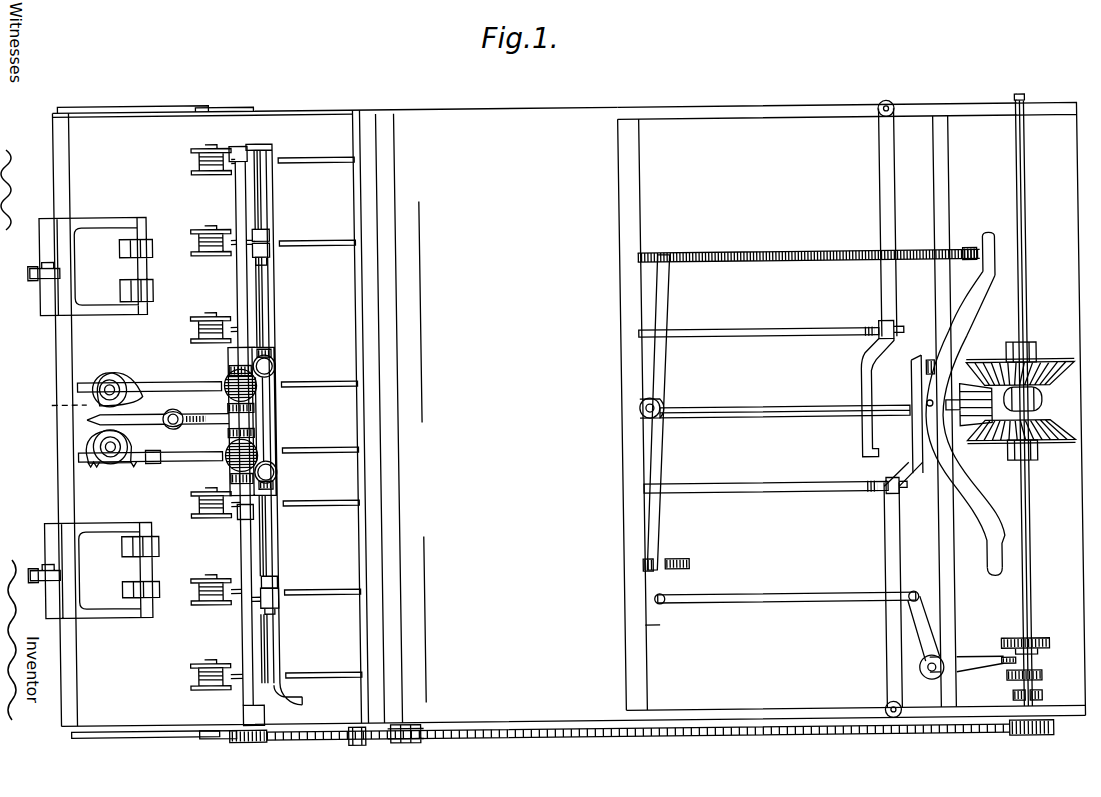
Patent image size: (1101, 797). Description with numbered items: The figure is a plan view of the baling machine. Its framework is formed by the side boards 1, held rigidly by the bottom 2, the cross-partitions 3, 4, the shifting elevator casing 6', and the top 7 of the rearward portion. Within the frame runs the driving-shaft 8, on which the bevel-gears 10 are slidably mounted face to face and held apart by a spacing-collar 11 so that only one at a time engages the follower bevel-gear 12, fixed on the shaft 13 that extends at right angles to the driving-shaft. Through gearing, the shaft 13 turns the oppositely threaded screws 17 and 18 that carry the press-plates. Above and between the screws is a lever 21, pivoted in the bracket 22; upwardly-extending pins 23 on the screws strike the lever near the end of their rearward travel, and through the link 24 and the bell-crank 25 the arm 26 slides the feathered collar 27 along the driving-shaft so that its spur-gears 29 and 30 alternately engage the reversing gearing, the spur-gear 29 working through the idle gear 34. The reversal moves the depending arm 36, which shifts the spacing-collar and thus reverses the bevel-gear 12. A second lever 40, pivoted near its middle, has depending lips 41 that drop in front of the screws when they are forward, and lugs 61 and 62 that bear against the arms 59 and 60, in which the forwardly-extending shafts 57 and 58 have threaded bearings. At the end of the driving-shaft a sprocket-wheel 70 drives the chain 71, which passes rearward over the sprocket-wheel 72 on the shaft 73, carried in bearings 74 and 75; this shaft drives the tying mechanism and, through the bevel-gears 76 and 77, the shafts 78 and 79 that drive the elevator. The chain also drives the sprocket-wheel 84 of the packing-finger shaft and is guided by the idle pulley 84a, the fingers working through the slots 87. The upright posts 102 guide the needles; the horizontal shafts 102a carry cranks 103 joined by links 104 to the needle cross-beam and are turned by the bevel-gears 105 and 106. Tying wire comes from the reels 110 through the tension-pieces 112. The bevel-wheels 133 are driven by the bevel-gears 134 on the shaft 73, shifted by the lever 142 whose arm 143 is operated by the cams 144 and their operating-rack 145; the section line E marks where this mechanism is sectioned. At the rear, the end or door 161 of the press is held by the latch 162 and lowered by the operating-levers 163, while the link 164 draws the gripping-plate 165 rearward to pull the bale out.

The side boards 1 is at (716, 713).
The bottom 2 is at (851, 411).
The cross-partition 3 is at (953, 163).
The cross-partition 4 is at (657, 414).
The shifting elevator casing 6' is at (423, 416).
The top 7 is at (338, 382).
The driving-shaft 8 is at (1029, 521).
The bevel-gears 10 is at (1057, 369).
The spacing-collar 11 is at (1042, 391).
The bevel-gear 12 is at (954, 402).
The shaft 13 is at (774, 422).
The screw 17 is at (721, 254).
The screw 18 is at (690, 568).
The lever 21 is at (666, 381).
The bracket 22 is at (640, 412).
The pins 23 is at (665, 559).
The link 24 is at (780, 598).
The bell-crank 25 is at (921, 642).
The arm 26 is at (970, 657).
The collar 27 is at (1037, 667).
The spur-gear 29 is at (1039, 683).
The spur-gear 30 is at (1037, 647).
The idle gear 34 is at (1006, 702).
The depending arm 36 is at (1044, 411).
The lever 40 is at (951, 483).
The depending lips 41 is at (1000, 263).
The shaft 57 is at (719, 333).
The shaft 58 is at (801, 493).
The arm 59 is at (884, 193).
The arm 60 is at (881, 635).
The lug 61 is at (861, 463).
The lug 62 is at (931, 369).
The sprocket-wheel 70 is at (1027, 743).
The chain 71 is at (492, 739).
The sprocket-wheel 72 is at (250, 742).
The shaft 73 is at (237, 544).
The bearing 74 is at (239, 143).
The bearing 75 is at (234, 708).
The bevel-gears 76 is at (231, 366).
The bevel-gears 77 is at (263, 389).
The shaft 78 is at (326, 444).
The shaft 79 is at (322, 385).
The sprocket-wheel 84 is at (403, 741).
The idle pulley 84a is at (345, 746).
The slots 87 is at (320, 417).
The upright posts 102 is at (274, 145).
The horizontal shafts 102a is at (273, 195).
The crank 103 is at (275, 225).
The link 104 is at (275, 242).
The bevel-gear 105 is at (277, 346).
The bevel-gear 106 is at (279, 362).
The reels 110 is at (195, 157).
The tension-piece 112 is at (243, 239).
The bevel-wheels 133 is at (229, 386).
The bevel-gears 134 is at (229, 402).
The lever 142 is at (192, 420).
The arm 143 is at (88, 415).
The cams 144 is at (111, 368).
The operating-rack 145 is at (133, 457).
The end or door 161 is at (64, 167).
The latch 162 is at (99, 213).
The operating-lever 163 is at (64, 275).
The link 164 is at (123, 95).
The gripping-plate 165 is at (232, 104).
The section line E E is at (335, 380).